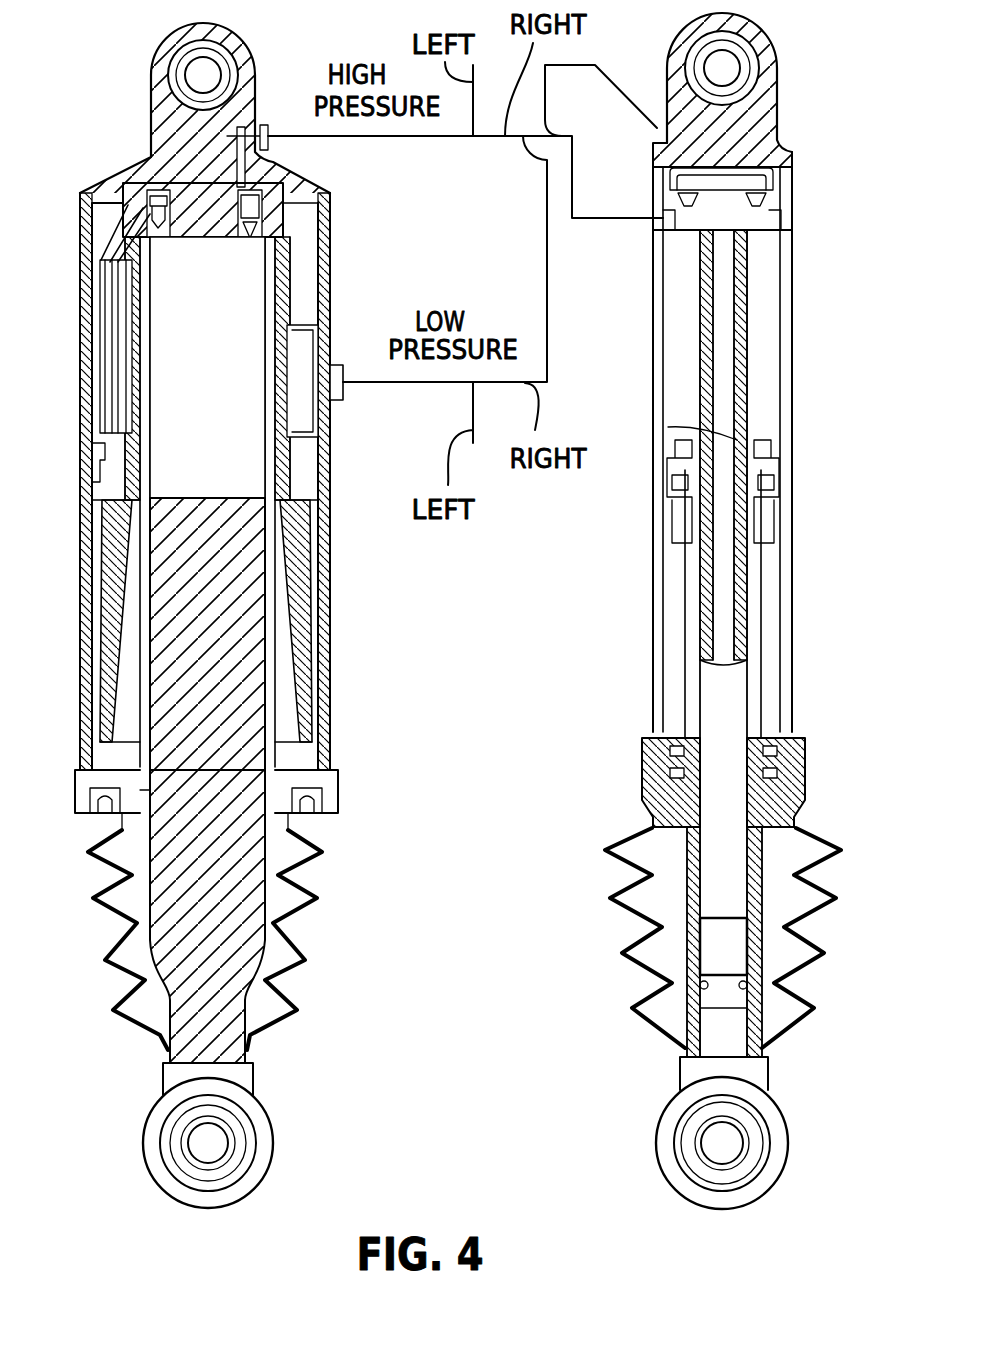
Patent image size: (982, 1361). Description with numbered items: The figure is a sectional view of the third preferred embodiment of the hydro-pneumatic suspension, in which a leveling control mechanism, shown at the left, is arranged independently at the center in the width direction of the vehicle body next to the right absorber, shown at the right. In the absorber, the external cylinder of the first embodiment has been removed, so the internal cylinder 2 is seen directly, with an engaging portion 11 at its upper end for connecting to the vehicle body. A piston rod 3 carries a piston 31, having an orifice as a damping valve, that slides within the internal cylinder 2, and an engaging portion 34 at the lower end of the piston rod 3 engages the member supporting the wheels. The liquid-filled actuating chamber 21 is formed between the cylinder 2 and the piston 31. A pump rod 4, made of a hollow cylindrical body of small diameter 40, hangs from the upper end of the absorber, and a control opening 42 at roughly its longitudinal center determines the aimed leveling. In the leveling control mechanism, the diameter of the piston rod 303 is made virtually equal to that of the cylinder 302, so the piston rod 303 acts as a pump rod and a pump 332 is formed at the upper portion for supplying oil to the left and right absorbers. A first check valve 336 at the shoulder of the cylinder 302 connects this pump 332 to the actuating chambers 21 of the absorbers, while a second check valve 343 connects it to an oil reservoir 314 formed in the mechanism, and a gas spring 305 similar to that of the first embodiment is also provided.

The internal cylinder 2 is at (626, 417).
The piston rod 3 is at (662, 907).
The pump rod 4 is at (678, 327).
The engaging portion 11 is at (682, 48).
The actuating chamber 21 is at (677, 378).
The piston 31 is at (682, 497).
The engaging portion 34 is at (680, 1105).
The hollow cylindrical body 40 is at (706, 272).
The control opening 42 is at (692, 447).
The cylinder 302 is at (272, 590).
The piston rod 303 is at (238, 727).
The gas spring 305 is at (313, 623).
The oil reservoir 314 is at (93, 348).
The pump 332 is at (223, 453).
The first check valve 336 is at (262, 210).
The second check valve 343 is at (128, 175).